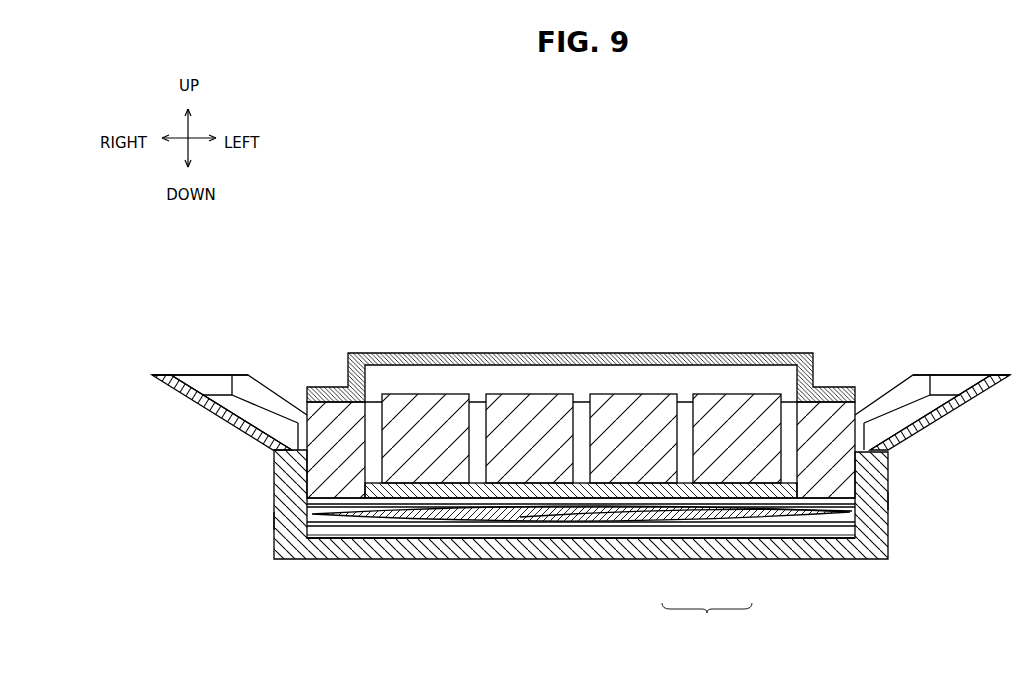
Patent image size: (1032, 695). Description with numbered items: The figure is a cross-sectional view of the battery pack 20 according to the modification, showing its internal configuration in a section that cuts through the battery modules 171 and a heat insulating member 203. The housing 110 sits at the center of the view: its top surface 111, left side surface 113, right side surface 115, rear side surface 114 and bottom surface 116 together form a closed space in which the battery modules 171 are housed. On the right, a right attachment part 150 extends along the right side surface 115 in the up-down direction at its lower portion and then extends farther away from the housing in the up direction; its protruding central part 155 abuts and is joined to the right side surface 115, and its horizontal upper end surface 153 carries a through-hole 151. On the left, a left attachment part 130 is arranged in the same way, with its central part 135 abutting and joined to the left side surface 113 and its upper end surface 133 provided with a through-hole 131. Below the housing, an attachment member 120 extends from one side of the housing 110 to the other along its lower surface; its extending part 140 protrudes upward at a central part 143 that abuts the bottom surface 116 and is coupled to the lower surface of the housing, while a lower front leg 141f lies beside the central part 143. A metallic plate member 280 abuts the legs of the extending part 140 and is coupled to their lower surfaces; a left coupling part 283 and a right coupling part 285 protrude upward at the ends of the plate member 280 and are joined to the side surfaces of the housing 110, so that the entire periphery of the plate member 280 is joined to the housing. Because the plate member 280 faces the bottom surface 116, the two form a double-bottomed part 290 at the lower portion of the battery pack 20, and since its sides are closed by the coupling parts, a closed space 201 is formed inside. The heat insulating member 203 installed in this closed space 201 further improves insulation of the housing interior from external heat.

The battery pack 20 is at (858, 122).
The housing 110 is at (603, 383).
The top surface 111 is at (509, 357).
The left side surface 113 is at (833, 393).
The rear side surface 114 is at (578, 410).
The right side surface 115 is at (328, 392).
The bottom surface 116 is at (745, 540).
The attachment member 120 is at (245, 470).
The left attachment part 130 is at (934, 392).
The through-hole 131 is at (953, 377).
The upper end surface 133 is at (920, 374).
The central part 135 is at (864, 400).
The extending part 140 is at (400, 540).
The front leg 141f is at (453, 540).
The central part 143 is at (508, 524).
The right attachment part 150 is at (229, 392).
The through-hole 151 is at (212, 377).
The upper end surface 153 is at (240, 374).
The central part 155 is at (298, 422).
The battery module 171 is at (441, 418).
The closed space 201 is at (815, 548).
The heat insulating member 203 is at (620, 530).
The plate member 280 is at (686, 537).
The left coupling part 283 is at (879, 500).
The right coupling part 285 is at (275, 521).
The double-bottomed part 290 is at (707, 618).